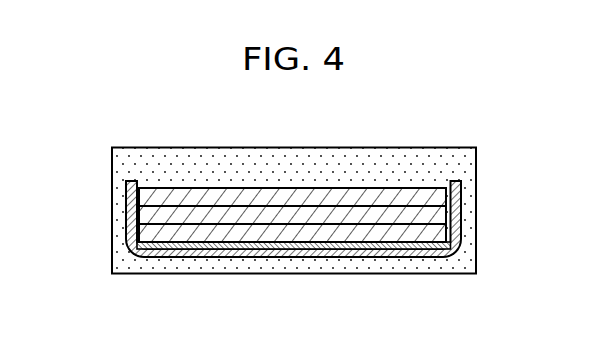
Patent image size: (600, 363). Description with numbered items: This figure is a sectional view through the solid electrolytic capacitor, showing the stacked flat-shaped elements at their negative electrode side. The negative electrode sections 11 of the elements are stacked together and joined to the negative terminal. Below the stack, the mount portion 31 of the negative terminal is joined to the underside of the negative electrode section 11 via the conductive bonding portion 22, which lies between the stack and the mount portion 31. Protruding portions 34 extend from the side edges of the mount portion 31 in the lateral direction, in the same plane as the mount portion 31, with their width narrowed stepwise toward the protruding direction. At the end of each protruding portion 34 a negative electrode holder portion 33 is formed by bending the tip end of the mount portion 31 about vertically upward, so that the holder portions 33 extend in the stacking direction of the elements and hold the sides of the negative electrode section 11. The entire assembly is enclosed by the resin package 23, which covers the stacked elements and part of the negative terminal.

The negative electrode section 11 is at (285, 196).
The conductive bonding portion 22 is at (202, 243).
The resin package 23 is at (125, 165).
The mount portion 31 is at (329, 246).
The negative electrode holder portion 33 is at (461, 211).
The protruding portion 34 is at (432, 252).